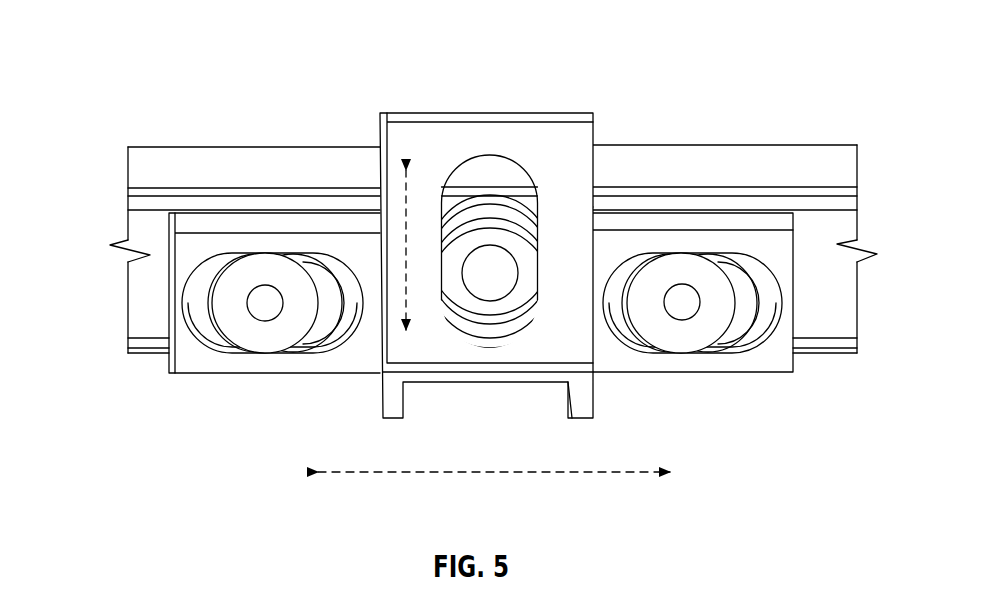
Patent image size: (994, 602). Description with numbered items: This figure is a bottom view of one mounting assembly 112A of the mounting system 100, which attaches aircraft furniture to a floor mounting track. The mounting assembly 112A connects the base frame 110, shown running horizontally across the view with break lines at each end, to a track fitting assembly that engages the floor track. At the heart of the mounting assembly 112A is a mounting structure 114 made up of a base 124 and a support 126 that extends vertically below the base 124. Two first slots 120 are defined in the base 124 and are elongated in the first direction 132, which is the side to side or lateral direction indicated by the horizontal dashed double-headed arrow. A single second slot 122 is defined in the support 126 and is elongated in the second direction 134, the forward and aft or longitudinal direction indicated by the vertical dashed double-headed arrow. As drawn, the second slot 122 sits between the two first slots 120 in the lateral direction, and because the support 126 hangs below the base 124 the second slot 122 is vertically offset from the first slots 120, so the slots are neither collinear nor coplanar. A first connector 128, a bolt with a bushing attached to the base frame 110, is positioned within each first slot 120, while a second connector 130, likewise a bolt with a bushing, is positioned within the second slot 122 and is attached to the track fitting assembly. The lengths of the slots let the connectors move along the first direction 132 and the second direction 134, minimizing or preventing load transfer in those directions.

The mounting system 100 is at (480, 301).
The base frame 110 is at (827, 350).
The mounting assembly 112A is at (231, 225).
The mounting structure 114 is at (526, 253).
The first slot 120 is at (317, 273).
The second slot 122 is at (491, 201).
The base 124 is at (247, 230).
The support 126 is at (572, 325).
The first connector 128 is at (259, 328).
The second connector 130 is at (480, 207).
The first direction 132 is at (558, 475).
The second direction 134 is at (404, 342).